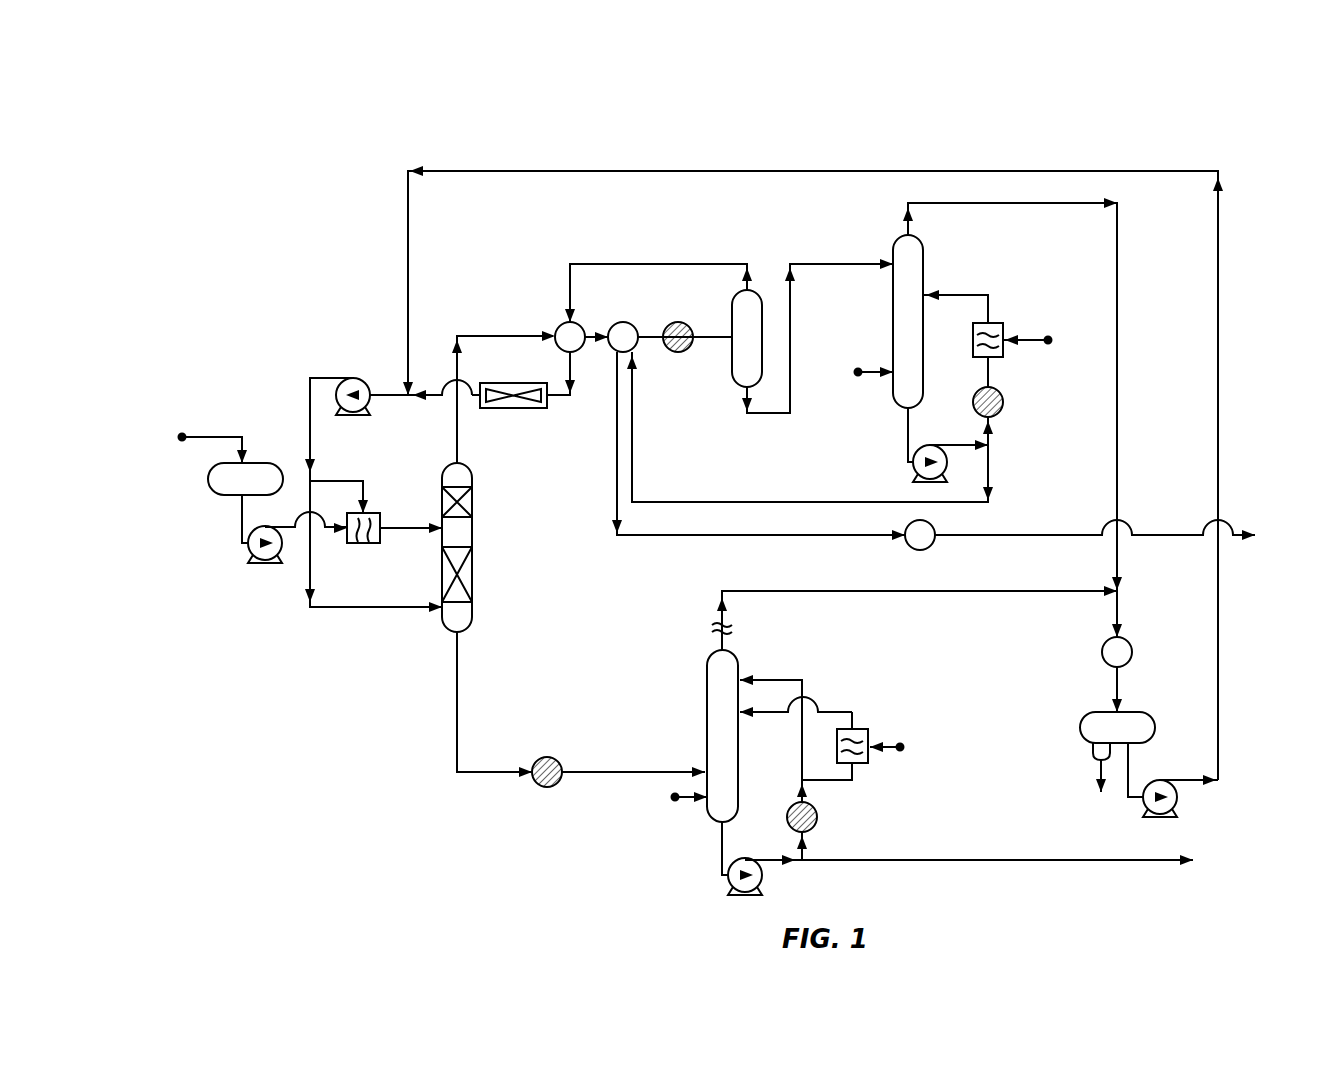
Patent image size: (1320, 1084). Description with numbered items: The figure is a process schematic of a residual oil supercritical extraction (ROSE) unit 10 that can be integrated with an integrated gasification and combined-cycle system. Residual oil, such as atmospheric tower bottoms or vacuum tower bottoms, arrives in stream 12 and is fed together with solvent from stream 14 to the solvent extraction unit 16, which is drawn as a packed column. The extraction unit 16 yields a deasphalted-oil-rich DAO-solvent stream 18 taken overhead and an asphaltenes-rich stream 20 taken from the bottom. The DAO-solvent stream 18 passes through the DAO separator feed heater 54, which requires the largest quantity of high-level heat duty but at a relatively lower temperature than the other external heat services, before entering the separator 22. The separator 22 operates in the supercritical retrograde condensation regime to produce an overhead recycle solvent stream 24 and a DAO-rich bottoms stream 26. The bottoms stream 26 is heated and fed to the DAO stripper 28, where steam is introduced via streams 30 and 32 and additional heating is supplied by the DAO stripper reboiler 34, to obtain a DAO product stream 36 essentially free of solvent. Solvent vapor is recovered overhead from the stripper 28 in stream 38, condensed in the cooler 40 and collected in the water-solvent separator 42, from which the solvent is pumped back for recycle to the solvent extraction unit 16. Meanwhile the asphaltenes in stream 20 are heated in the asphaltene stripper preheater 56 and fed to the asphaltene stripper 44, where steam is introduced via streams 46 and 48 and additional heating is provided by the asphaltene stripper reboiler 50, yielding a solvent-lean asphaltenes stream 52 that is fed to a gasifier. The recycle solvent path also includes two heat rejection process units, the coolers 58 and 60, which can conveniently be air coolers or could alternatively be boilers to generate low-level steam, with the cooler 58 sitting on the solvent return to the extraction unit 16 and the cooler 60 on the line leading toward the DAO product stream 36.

The ROSE unit 10 is at (311, 134).
The residual oil stream 12 is at (182, 441).
The solvent stream 14 is at (310, 404).
The solvent extraction unit 16 is at (473, 572).
The DAO-solvent stream 18 is at (497, 333).
The asphaltenes-rich stream 20 is at (468, 771).
The separator 22 is at (753, 291).
The overhead recycle solvent stream 24 is at (658, 262).
The DAO-rich bottoms stream 26 is at (757, 417).
The DAO stripper 28 is at (925, 252).
The steam stream 30 is at (858, 378).
The steam stream 32 is at (1037, 338).
The DAO stripper reboiler 34 is at (1005, 401).
The DAO product stream 36 is at (1148, 535).
The solvent vapor overhead stream 38 is at (1118, 247).
The cooler 40 is at (1130, 641).
The water-solvent separator 42 is at (1125, 712).
The asphaltene stripper 44 is at (737, 652).
The steam stream 46 is at (680, 804).
The steam stream 48 is at (897, 744).
The asphaltene stripper reboiler 50 is at (818, 815).
The solvent-lean asphaltenes stream 52 is at (1137, 858).
The DAO separator feed heater 54 is at (673, 352).
The asphaltene stripper preheater 56 is at (547, 787).
The cooler 58 is at (513, 409).
The cooler 60 is at (923, 550).